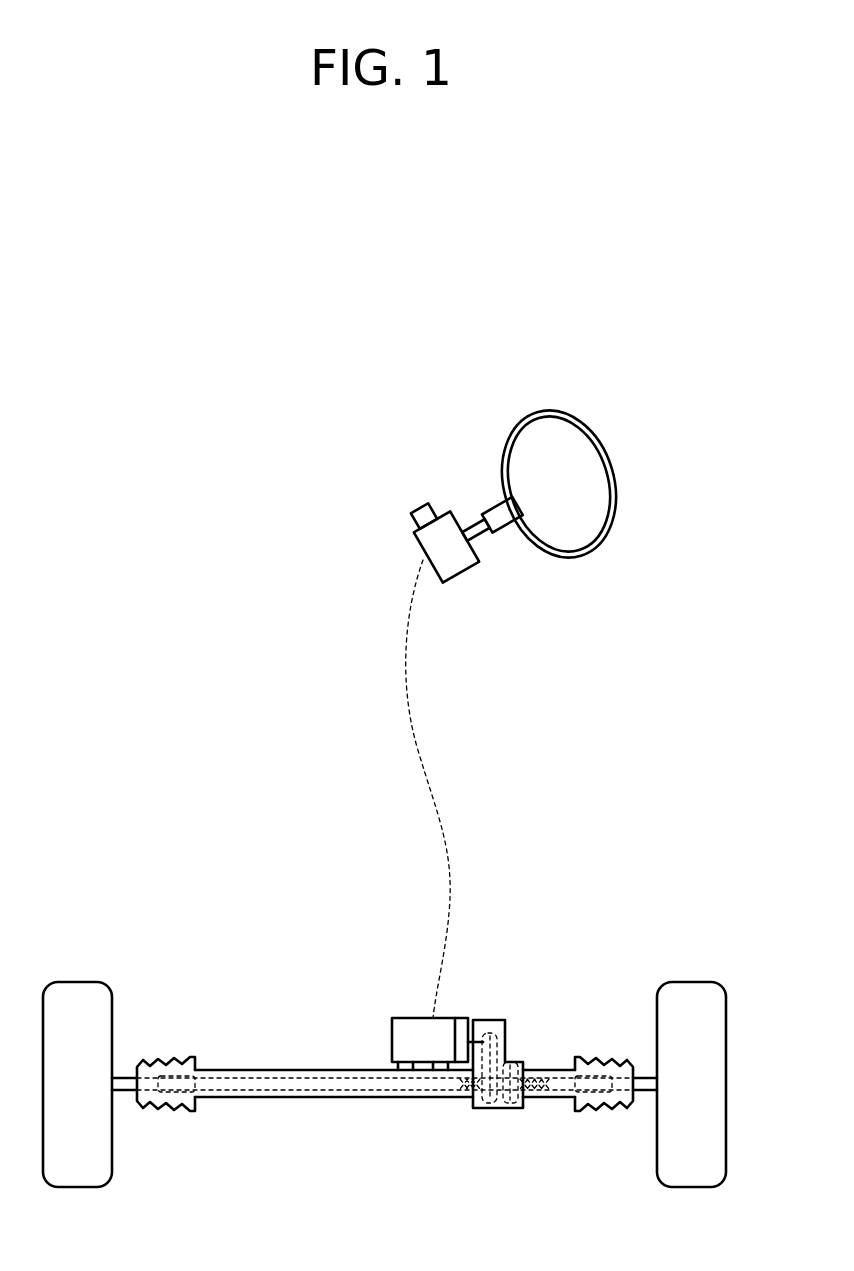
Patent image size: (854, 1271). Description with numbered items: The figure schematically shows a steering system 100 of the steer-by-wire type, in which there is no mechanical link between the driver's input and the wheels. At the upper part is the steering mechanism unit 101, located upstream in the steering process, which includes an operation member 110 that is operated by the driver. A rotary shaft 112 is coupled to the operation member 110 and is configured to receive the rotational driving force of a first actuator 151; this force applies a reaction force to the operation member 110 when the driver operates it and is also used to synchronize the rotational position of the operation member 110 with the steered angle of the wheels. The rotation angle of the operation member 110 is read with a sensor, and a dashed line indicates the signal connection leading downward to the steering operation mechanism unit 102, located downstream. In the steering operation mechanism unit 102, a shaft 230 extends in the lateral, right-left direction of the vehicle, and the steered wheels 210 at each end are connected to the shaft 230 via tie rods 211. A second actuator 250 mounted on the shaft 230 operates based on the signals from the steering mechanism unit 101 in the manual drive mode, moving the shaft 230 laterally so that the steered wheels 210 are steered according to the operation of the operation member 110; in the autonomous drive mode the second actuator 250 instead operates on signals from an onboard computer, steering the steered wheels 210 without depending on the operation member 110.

The steering system 100 is at (216, 313).
The steering mechanism unit 101 is at (447, 430).
The steering operation mechanism unit 102 is at (525, 1000).
The operation member 110 is at (613, 528).
The rotary shaft 112 is at (512, 522).
The first actuator 151 is at (411, 515).
The steered wheels 210 is at (78, 983).
The tie rods 211 is at (127, 1075).
The shaft 230 is at (425, 1100).
The second actuator 250 is at (408, 1018).